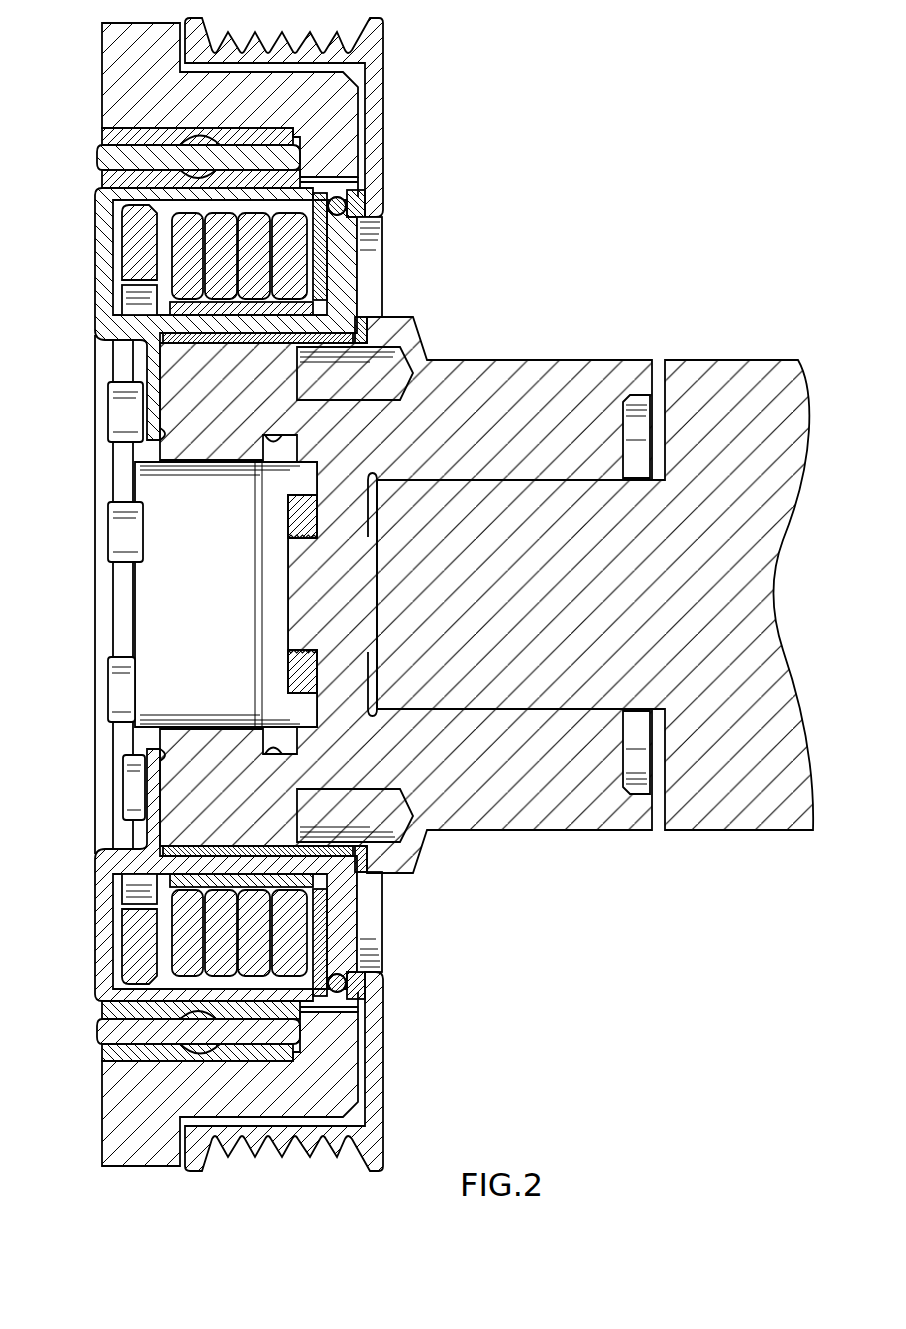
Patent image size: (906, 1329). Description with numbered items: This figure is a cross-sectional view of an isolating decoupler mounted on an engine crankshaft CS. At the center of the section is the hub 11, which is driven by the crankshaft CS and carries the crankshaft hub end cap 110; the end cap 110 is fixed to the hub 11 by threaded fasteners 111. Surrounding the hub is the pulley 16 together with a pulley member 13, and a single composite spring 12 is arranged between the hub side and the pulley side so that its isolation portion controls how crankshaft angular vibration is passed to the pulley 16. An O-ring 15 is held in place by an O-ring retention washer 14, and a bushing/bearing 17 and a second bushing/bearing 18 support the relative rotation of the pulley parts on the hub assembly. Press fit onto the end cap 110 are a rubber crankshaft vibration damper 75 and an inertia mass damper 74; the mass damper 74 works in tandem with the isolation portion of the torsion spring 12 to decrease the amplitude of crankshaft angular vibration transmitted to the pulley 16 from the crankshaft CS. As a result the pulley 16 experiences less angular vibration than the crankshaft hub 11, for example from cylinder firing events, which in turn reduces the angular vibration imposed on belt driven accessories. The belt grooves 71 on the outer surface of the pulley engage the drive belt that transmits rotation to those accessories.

The hub 11 is at (503, 396).
The composite spring 12 is at (187, 228).
The pulley member 13 is at (163, 303).
The O-ring retention washer 14 is at (322, 194).
The O-ring 15 is at (338, 198).
The pulley 16 is at (370, 207).
The bushing/bearing 17 is at (322, 334).
The bushing/bearing 18 is at (367, 333).
The crankshaft hub end cap 110 is at (100, 246).
The threaded fasteners 111 is at (124, 410).
The belt grooves 71 is at (285, 1150).
The inertia mass damper 74 is at (128, 1090).
The rubber crankshaft vibration damper 75 is at (100, 1037).
The crankshaft CS is at (710, 390).